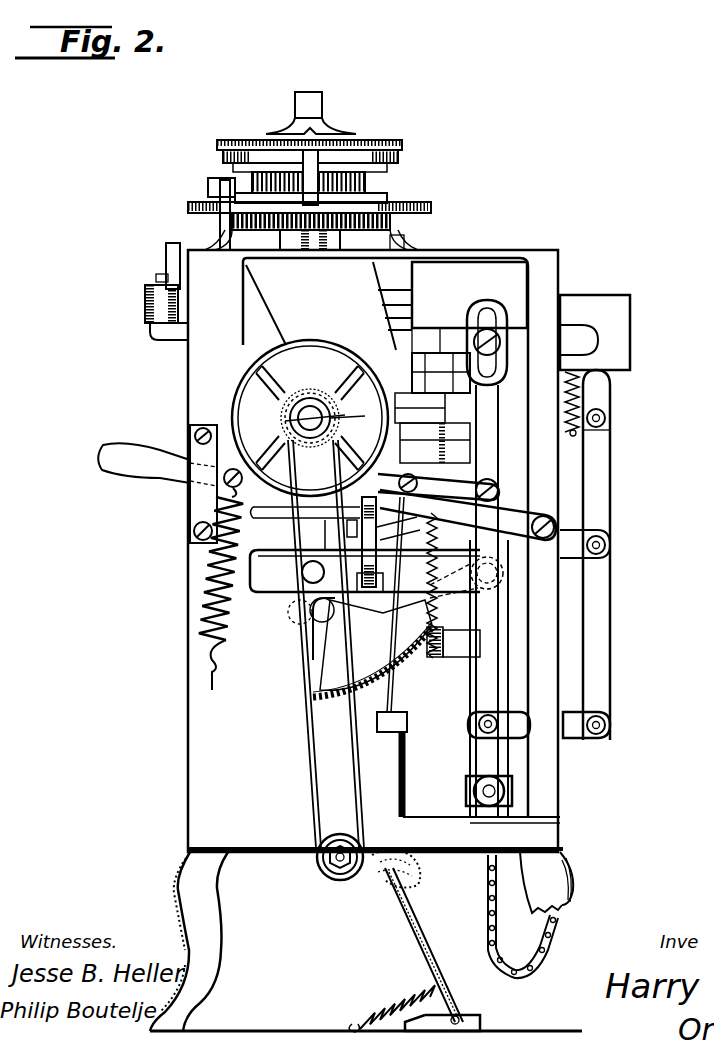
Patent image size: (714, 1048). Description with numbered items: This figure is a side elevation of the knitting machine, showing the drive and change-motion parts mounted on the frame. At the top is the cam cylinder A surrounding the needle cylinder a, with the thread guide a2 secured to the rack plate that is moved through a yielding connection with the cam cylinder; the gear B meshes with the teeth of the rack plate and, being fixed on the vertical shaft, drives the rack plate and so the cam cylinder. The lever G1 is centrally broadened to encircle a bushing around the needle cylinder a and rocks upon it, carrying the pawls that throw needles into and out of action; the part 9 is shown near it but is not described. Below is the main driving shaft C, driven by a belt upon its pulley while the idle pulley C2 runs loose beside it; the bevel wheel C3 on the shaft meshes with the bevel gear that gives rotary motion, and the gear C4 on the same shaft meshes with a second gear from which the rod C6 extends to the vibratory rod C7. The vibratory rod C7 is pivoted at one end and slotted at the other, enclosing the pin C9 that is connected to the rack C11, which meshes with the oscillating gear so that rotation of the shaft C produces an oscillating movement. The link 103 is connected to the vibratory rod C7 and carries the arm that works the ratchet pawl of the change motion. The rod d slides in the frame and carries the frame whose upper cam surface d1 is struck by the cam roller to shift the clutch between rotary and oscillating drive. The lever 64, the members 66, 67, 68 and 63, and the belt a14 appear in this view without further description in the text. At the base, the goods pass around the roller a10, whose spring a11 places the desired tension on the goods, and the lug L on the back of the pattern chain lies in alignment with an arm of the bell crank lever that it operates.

The thread guide a2 is at (322, 104).
The needle cylinder a is at (365, 180).
The cam cylinder A is at (380, 192).
The gear B is at (395, 212).
The stem 9 is at (158, 280).
The lever G1 is at (152, 300).
The rack C11 is at (400, 335).
The pin C9 is at (462, 345).
The idle pulley C2 is at (316, 344).
The main driving shaft C is at (306, 400).
The gear C4 is at (317, 397).
The bevel wheel C3 is at (298, 420).
The rod d is at (425, 392).
The upper cam surface d1 is at (428, 432).
The vibratory rod C7 is at (478, 470).
The link 103 is at (455, 487).
The lever 64 is at (145, 452).
The slider 66 is at (376, 538).
The arm 67 is at (403, 528).
The spring 68 is at (279, 589).
The rod C6 is at (410, 598).
The sector gear rod 63 is at (372, 657).
The belt a14 is at (322, 778).
The roller a10 is at (375, 870).
The spring a11 is at (398, 998).
The lug L is at (488, 880).